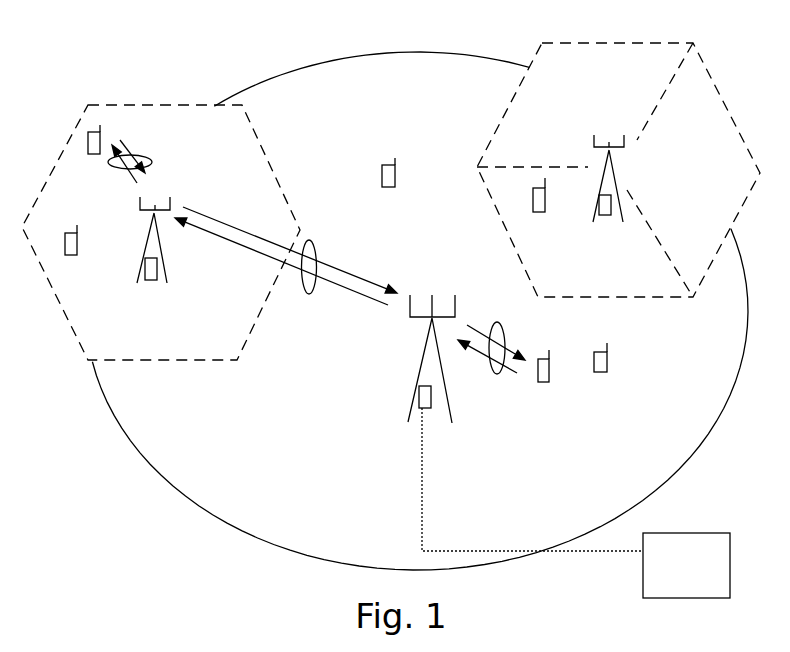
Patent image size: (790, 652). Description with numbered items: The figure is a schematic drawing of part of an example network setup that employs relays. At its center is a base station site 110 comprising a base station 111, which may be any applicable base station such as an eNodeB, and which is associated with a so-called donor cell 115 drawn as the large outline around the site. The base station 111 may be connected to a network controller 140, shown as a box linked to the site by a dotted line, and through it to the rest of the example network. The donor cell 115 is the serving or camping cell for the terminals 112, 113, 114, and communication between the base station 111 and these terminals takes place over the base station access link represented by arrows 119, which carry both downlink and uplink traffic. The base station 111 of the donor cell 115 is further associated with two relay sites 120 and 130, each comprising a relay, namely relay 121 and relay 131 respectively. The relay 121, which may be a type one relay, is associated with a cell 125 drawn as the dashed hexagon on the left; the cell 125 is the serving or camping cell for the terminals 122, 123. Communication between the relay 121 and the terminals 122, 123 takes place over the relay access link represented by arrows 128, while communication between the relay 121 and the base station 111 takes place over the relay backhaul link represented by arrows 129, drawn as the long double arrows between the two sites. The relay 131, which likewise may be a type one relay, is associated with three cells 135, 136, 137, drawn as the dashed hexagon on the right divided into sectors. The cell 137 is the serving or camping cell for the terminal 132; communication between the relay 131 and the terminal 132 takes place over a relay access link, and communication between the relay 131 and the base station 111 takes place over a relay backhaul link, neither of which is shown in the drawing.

The base station site 110 is at (422, 363).
The base station 111 is at (431, 409).
The terminal 112 is at (385, 188).
The terminal 113 is at (542, 383).
The terminal 114 is at (600, 373).
The donor cell 115 is at (203, 508).
The base station access link 119 is at (493, 377).
The relay site 120 is at (145, 237).
The relay 121 is at (157, 281).
The terminal 122 is at (70, 257).
The terminal 123 is at (92, 155).
The cell 125 is at (70, 333).
The relay access link 128 is at (145, 152).
The relay backhaul link 129 is at (310, 295).
The relay site 130 is at (617, 192).
The relay 131 is at (611, 216).
The terminal 132 is at (537, 213).
The cell 135 is at (495, 135).
The cell 136 is at (725, 107).
The cell 137 is at (600, 297).
The network controller 140 is at (576, 503).